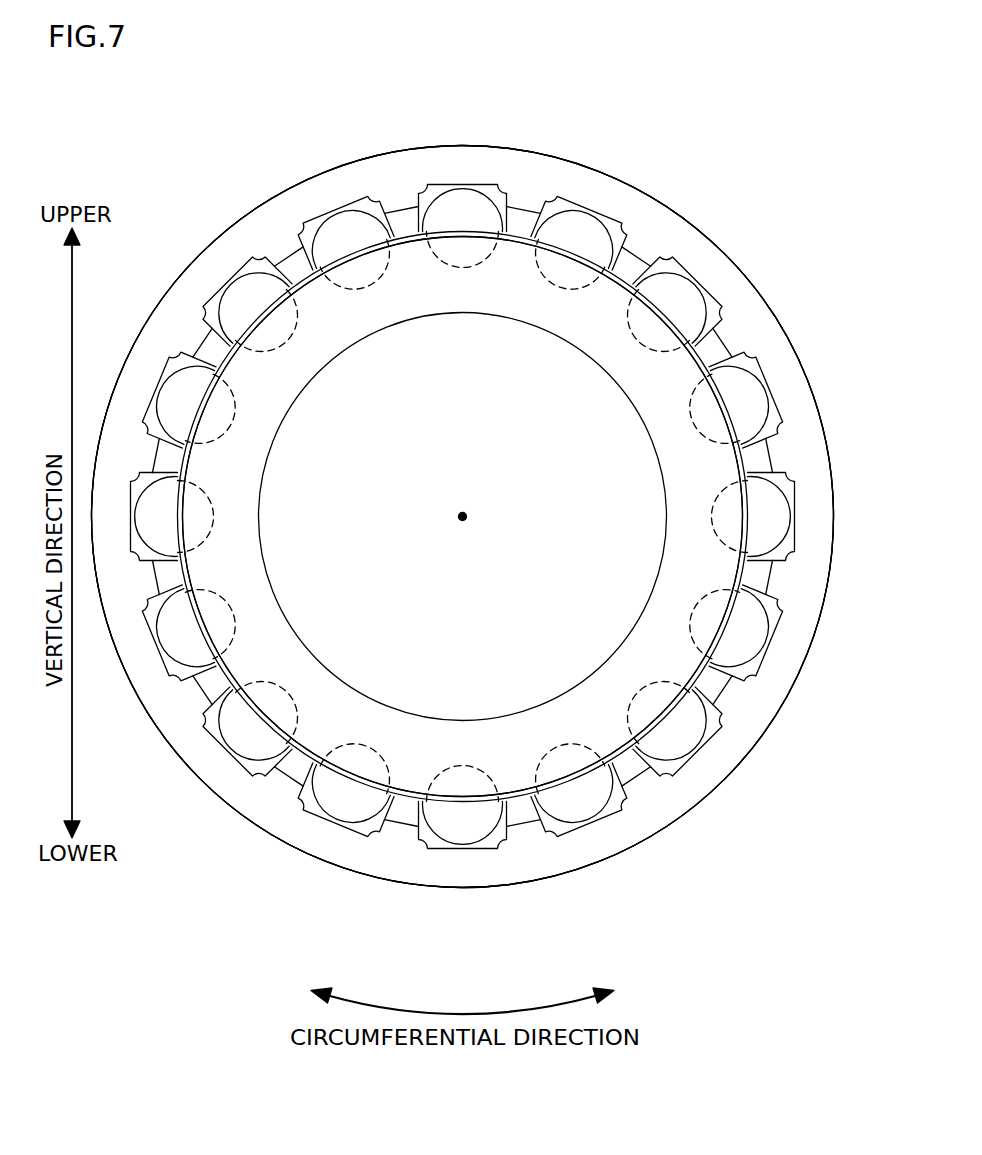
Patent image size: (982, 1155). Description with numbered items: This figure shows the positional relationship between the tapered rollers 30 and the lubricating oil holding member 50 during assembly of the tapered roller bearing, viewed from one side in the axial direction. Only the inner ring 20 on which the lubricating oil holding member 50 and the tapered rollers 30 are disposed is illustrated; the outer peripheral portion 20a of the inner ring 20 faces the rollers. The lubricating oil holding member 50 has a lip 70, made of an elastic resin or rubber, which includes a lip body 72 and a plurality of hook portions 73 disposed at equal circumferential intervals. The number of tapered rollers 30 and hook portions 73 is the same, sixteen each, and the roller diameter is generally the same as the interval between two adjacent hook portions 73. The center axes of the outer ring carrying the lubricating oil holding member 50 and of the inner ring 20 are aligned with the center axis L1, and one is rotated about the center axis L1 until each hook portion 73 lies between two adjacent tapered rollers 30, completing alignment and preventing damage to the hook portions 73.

The inner ring 20 is at (412, 260).
The outer peripheral surface of rotor core 20a is at (623, 350).
The tapered roller 30 is at (613, 263).
The hook portion 73 is at (527, 213).
The lip body 72 is at (737, 742).
The lip 70 is at (525, 870).
The lubricating oil holding member 50 is at (688, 876).
The center axis L1 is at (463, 523).